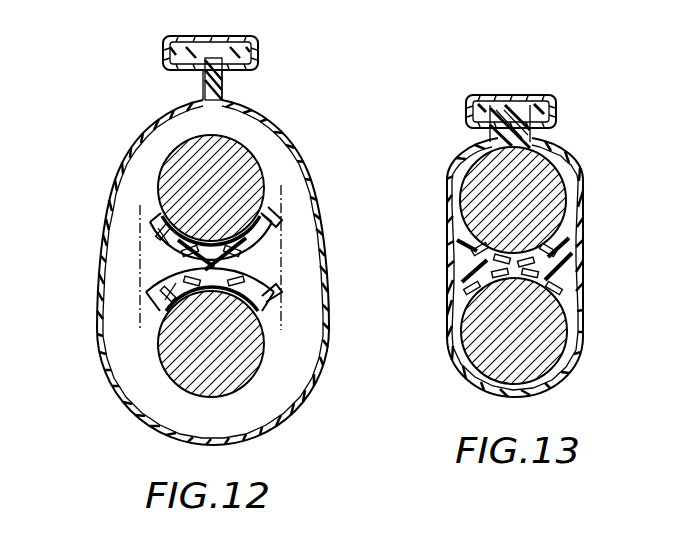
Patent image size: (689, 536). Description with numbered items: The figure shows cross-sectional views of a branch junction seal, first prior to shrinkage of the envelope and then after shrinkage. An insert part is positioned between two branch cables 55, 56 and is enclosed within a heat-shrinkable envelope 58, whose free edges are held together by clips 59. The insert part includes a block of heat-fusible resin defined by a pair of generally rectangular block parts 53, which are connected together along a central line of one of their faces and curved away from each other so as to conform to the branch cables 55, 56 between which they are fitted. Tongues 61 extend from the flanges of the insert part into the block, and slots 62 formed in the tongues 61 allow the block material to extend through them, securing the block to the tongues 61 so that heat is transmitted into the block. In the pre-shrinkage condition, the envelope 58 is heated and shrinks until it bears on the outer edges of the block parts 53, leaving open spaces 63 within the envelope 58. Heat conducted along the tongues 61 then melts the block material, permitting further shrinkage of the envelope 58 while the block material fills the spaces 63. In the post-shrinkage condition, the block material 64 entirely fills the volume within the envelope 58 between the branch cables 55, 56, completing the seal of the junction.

In FIG. 12, the block parts 53 is at (278, 243).
In FIG. 12, the branch cable 55 is at (172, 352).
In FIG. 13, the branch cable 55 is at (542, 350).
In FIG. 12, the branch cable 56 is at (227, 155).
In FIG. 13, the branch cable 56 is at (552, 176).
In FIG. 12, the heat-shrinkable envelope 58 is at (108, 238).
In FIG. 13, the heat-shrinkable envelope 58 is at (449, 200).
In FIG. 12, the clip 59 is at (220, 38).
In FIG. 13, the clip 59 is at (507, 93).
In FIG. 12, the tongue 61 is at (273, 217).
In FIG. 13, the tongue 61 is at (582, 232).
In FIG. 12, the slots 62 is at (140, 240).
In FIG. 12, the spaces 63 is at (152, 197).
In FIG. 13, the block material 64 is at (557, 253).